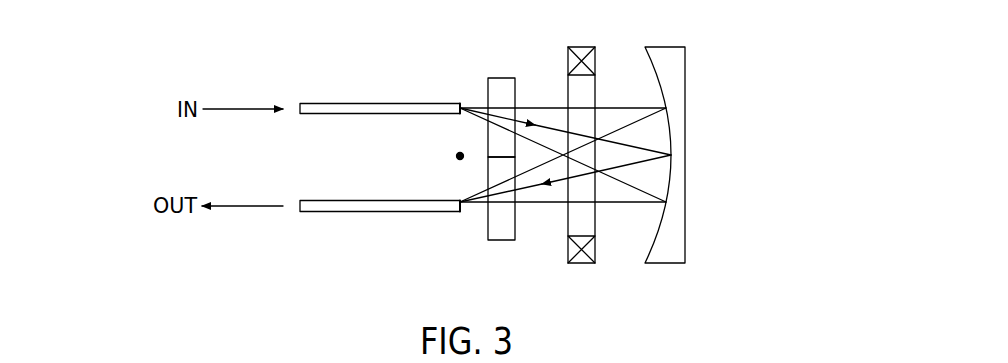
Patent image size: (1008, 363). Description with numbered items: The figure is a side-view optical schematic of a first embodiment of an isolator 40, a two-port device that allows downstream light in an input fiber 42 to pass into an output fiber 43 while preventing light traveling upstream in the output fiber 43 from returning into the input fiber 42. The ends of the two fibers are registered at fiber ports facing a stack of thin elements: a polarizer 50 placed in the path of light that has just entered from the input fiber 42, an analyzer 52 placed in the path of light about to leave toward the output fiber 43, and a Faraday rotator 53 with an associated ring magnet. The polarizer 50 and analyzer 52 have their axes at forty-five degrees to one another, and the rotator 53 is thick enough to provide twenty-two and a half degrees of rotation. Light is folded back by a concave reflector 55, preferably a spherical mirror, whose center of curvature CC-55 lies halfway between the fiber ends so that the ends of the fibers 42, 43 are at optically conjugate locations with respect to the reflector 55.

The isolator 40 is at (333, 276).
The input fiber 42 is at (360, 103).
The output fiber 43 is at (368, 200).
The center of curvature CC-55 is at (456, 156).
The polarizer 50 is at (518, 89).
The analyzer 52 is at (518, 229).
The Faraday rotator 53 is at (598, 90).
The concave reflector 55 is at (648, 254).